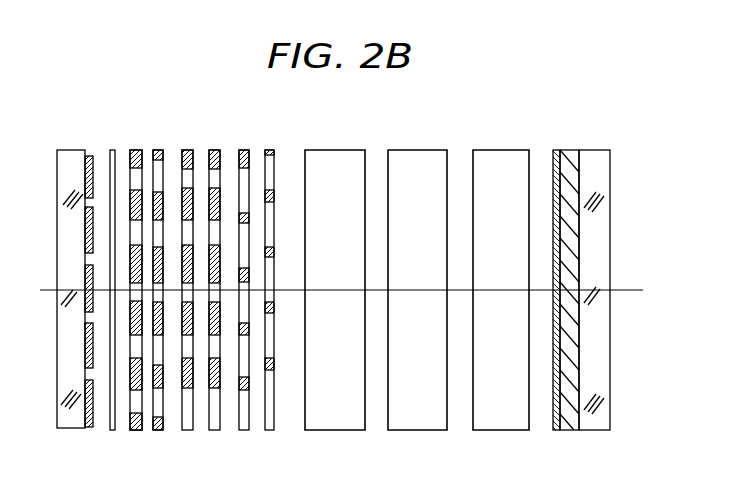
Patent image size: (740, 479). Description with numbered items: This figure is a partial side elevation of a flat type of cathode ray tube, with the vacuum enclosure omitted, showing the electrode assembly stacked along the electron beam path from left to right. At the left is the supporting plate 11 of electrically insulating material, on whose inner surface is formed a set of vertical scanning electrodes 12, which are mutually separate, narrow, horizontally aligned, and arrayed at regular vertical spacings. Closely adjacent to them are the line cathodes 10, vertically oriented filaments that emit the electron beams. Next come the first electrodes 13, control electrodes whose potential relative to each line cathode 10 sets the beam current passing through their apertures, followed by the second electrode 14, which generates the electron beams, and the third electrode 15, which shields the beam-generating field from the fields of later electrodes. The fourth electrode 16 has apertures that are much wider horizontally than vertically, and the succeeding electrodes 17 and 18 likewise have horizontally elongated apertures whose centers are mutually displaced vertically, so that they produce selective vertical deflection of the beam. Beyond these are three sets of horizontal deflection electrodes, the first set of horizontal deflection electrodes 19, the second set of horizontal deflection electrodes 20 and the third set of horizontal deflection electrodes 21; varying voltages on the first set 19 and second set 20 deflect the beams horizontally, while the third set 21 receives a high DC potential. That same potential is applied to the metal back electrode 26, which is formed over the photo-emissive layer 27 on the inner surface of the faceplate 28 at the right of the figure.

The line cathodes 10 is at (112, 150).
The supporting plate 11 is at (78, 152).
The vertical scanning electrodes 12 is at (88, 152).
The first electrodes (G1 electrodes) 13 is at (135, 152).
The second electrode (G2 electrode) 14 is at (157, 152).
The third electrode (G3 electrode) 15 is at (186, 152).
The fourth electrode (G4 electrode) 16 is at (213, 152).
The vertical deflection electrode 17 is at (243, 152).
The vertical deflection electrode 18 is at (268, 152).
The DH-1 electrodes 19 is at (331, 154).
The DH-2 electrodes 20 is at (413, 154).
The DH-3 electrodes 21 is at (497, 154).
The metal back electrode 26 is at (556, 150).
The photo-emissive layer 27 is at (568, 150).
The faceplate 28 is at (592, 152).